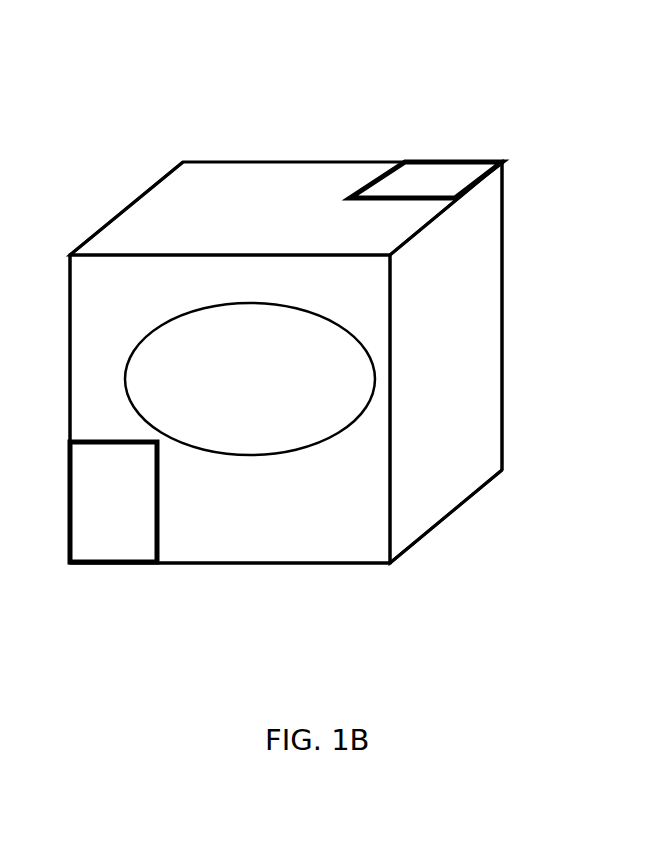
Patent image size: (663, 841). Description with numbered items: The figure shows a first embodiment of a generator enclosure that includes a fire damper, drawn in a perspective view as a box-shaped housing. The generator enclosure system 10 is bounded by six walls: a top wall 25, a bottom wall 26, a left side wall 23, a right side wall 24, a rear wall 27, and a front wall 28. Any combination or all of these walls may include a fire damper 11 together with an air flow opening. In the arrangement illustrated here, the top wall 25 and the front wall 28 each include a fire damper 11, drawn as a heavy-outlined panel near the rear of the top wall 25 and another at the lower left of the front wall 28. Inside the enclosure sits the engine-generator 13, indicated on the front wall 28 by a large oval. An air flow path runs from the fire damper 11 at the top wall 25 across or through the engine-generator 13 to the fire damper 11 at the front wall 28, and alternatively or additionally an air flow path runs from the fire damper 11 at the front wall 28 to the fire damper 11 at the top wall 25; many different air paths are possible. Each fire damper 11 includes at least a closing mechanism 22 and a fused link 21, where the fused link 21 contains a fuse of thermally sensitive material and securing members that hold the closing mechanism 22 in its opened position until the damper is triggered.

The generator enclosure system 10 is at (94, 102).
The fire damper 11 is at (447, 168).
The engine-generator 13 is at (236, 394).
The fused link 21 is at (283, 552).
The closing mechanism 22 is at (233, 160).
The left side wall 23 is at (69, 350).
The right side wall 24 is at (482, 385).
The top wall 25 is at (300, 180).
The bottom wall 26 is at (188, 563).
The rear wall 27 is at (503, 262).
The front wall 28 is at (338, 291).